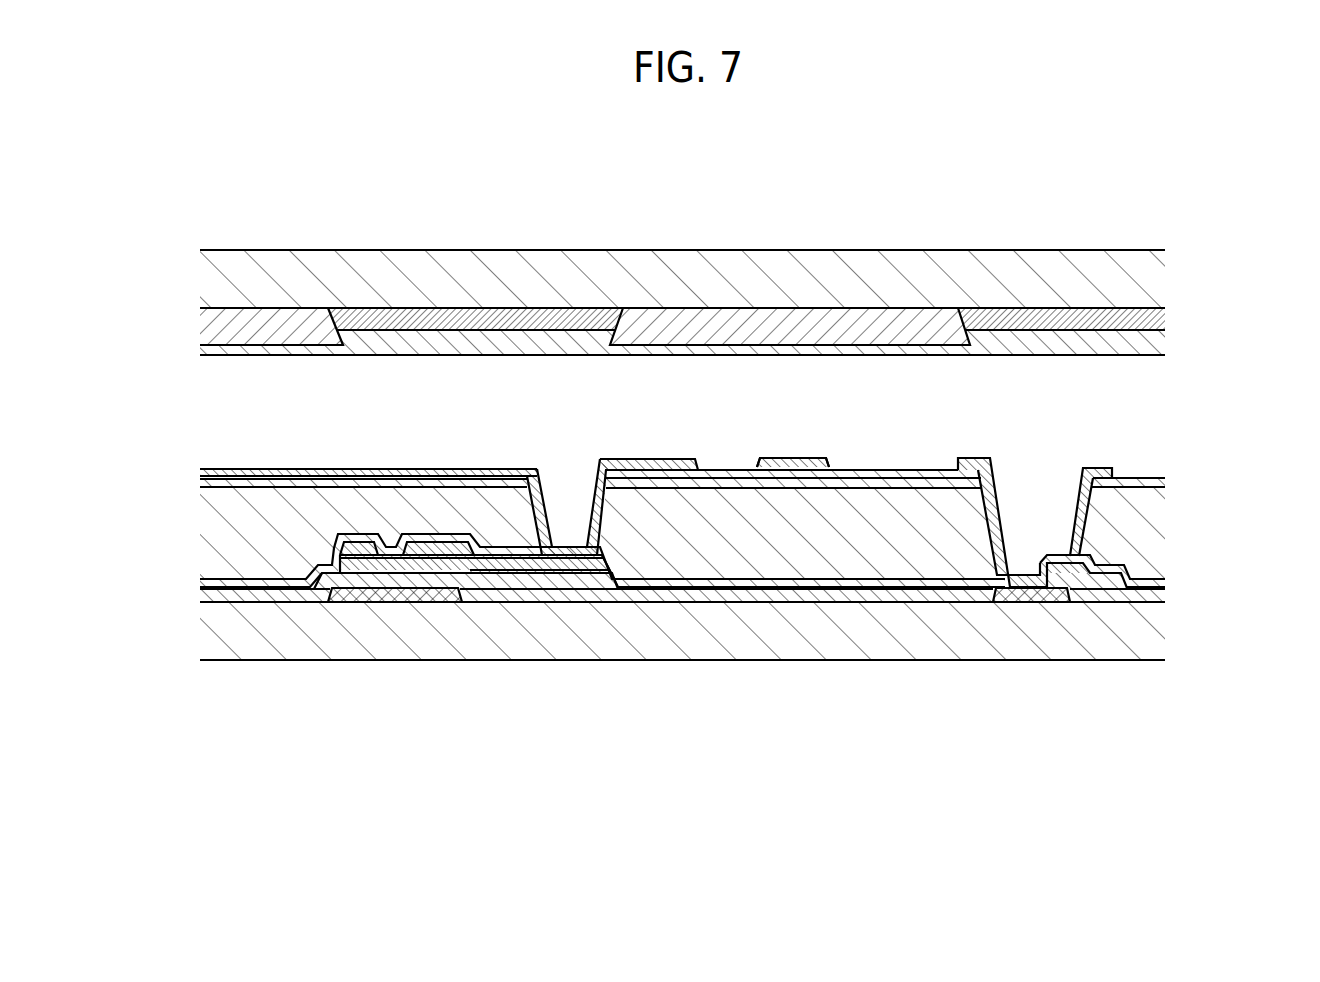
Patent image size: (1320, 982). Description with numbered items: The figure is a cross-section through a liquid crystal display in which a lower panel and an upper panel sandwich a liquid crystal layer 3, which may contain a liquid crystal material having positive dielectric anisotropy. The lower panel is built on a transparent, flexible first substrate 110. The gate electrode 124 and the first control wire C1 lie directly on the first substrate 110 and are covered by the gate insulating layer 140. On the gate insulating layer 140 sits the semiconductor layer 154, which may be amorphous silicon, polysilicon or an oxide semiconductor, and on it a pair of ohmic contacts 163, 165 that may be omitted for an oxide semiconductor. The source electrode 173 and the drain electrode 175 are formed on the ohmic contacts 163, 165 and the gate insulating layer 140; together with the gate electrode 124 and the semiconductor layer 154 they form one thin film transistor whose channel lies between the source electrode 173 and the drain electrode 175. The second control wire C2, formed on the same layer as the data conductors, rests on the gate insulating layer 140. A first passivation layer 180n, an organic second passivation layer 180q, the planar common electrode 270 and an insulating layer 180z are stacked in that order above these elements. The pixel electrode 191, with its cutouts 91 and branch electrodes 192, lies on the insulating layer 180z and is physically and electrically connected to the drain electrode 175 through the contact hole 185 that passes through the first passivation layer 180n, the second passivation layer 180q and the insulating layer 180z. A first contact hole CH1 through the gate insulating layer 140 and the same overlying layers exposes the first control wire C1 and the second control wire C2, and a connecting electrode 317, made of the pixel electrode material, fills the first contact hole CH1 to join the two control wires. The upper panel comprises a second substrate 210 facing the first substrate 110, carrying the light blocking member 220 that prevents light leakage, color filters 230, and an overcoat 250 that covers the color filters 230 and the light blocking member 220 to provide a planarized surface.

The liquid crystal layer 3 is at (230, 408).
The cutouts 91 is at (758, 463).
The first substrate 110 is at (953, 640).
The gate electrode 124 is at (395, 600).
The gate insulating layer 140 is at (258, 593).
The semiconductor layer 154 is at (481, 577).
The ohmic contact 163 is at (353, 545).
The ohmic contact 165 is at (530, 573).
The source electrode 173 is at (366, 547).
The drain electrode 175 is at (583, 578).
The first passivation layer 180n is at (679, 583).
The second passivation layer 180q is at (770, 550).
The insulating layer 180z is at (883, 473).
The contact hole 185 is at (540, 512).
The pixel electrode 191 is at (665, 459).
The branch electrodes 192 is at (796, 458).
The second substrate 210 is at (872, 270).
The light blocking member 220 is at (427, 318).
The color filters 230 is at (277, 318).
The overcoat 250 is at (535, 340).
The common electrode 270 is at (866, 480).
The connecting electrode 317 is at (1100, 466).
The first control wire C1 is at (1025, 590).
The second control wire C2 is at (1100, 585).
The first contact hole CH1 is at (988, 517).